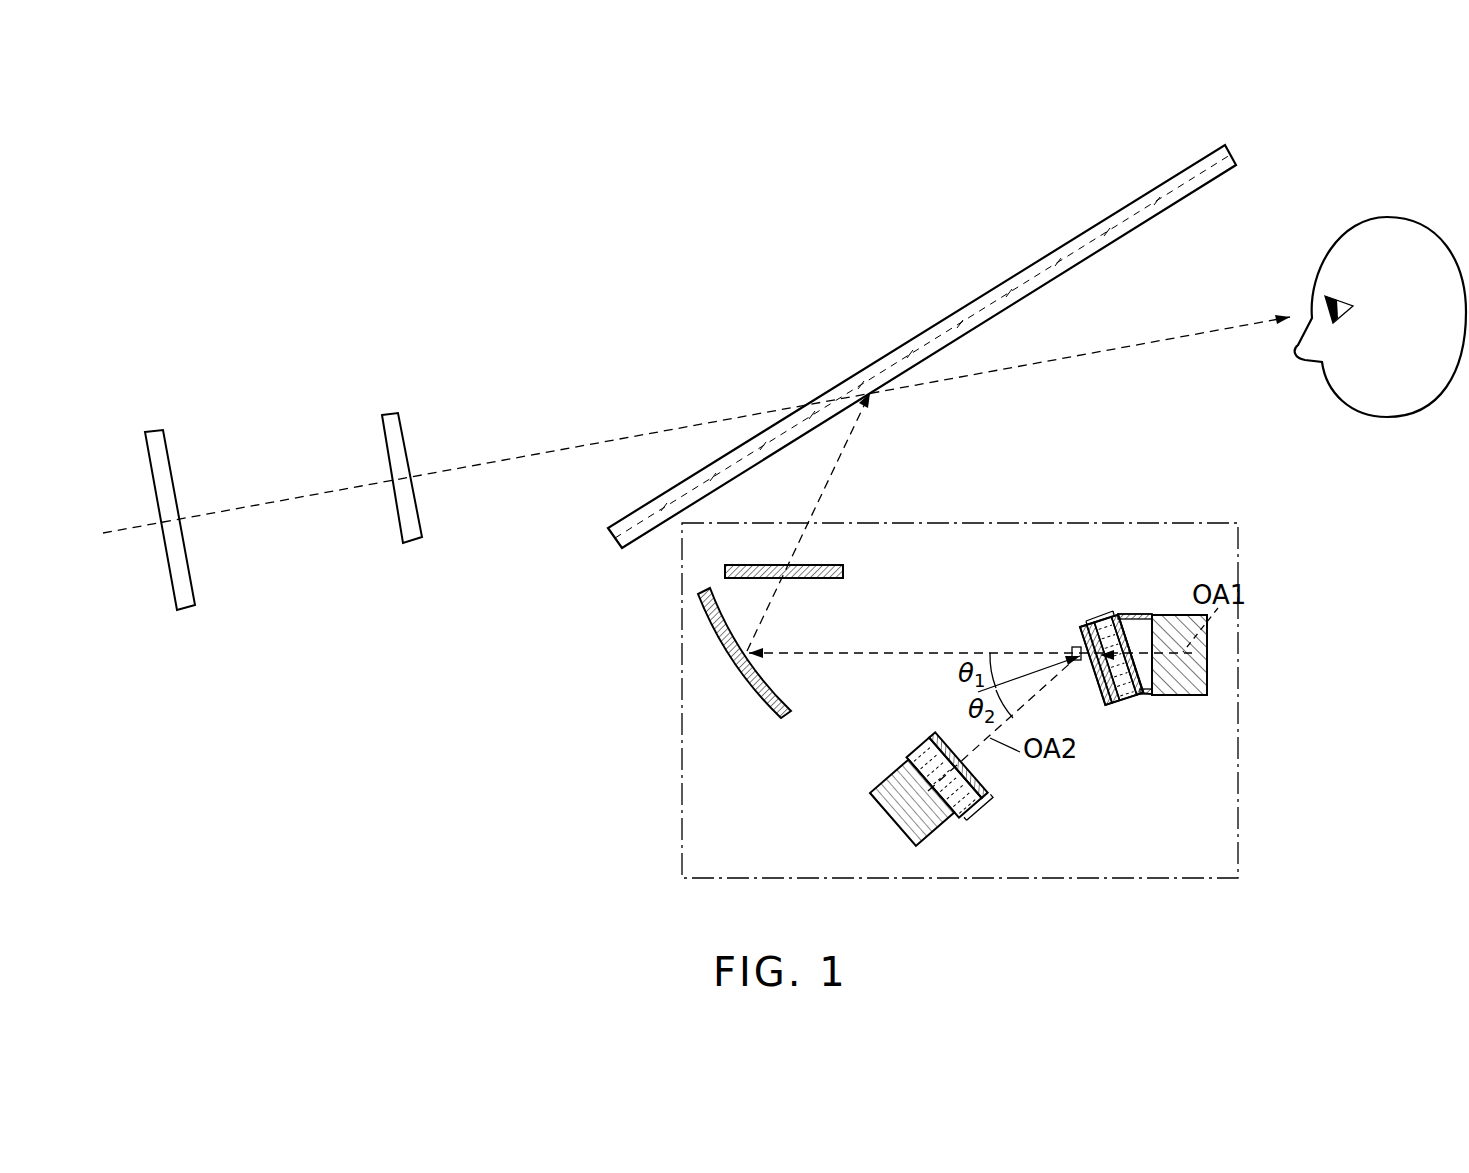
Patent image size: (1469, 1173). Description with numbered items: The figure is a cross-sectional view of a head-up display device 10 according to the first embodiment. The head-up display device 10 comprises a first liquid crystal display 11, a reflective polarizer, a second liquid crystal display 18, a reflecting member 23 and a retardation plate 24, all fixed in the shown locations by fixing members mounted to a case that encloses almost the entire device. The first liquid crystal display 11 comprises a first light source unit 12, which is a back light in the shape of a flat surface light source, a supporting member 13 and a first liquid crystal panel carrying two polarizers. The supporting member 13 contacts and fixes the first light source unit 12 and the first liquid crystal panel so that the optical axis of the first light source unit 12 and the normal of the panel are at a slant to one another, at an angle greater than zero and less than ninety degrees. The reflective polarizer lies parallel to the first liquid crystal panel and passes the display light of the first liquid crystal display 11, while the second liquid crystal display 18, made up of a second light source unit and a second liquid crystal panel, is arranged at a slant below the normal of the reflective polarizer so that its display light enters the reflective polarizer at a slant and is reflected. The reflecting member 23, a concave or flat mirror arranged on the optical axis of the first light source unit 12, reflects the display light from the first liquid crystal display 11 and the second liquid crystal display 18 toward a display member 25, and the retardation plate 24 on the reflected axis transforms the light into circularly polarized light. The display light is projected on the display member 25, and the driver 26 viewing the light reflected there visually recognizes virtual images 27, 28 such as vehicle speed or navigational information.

The head-up display device 10 is at (1242, 692).
The first liquid crystal display 11 is at (1129, 655).
The first light source unit 12 is at (1185, 696).
The supporting member 13 is at (1134, 614).
The second liquid crystal display 18 is at (967, 780).
The reflecting member 23 is at (768, 711).
The retardation plate 24 is at (830, 579).
The display member 25 is at (1086, 232).
The driver 26 is at (1387, 217).
The virtual image 27 is at (390, 414).
The virtual image 28 is at (158, 431).